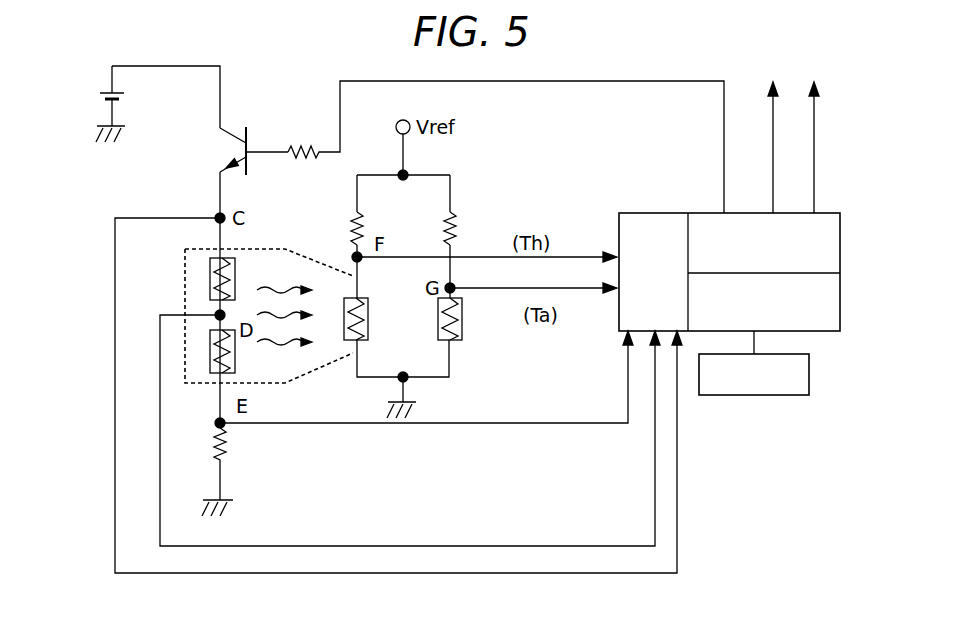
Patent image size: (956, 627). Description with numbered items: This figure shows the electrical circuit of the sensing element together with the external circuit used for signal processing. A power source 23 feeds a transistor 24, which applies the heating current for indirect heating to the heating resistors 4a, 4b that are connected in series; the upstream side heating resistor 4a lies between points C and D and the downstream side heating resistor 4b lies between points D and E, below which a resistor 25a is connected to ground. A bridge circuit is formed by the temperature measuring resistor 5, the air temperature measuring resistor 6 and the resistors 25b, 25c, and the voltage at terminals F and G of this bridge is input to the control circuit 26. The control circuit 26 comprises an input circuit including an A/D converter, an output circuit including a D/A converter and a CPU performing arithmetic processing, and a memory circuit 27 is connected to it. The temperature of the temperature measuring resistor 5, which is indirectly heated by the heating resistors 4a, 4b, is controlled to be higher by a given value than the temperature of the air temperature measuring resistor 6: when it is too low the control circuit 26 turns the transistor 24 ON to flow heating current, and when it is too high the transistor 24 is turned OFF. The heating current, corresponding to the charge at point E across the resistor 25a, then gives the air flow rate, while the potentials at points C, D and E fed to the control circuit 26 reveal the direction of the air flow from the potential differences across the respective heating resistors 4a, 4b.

The power source 23 is at (85, 104).
The transistor 24 is at (253, 132).
The heating resistor 4a is at (232, 268).
The heating resistor 4b is at (210, 352).
The resistor 25a is at (234, 446).
The resistor 25b is at (345, 222).
The resistor 25c is at (461, 224).
The temperature measuring resistor 5 is at (368, 322).
The air temperature measuring resistor 6 is at (461, 322).
The control circuit 26 is at (681, 213).
The memory circuit 27 is at (748, 398).